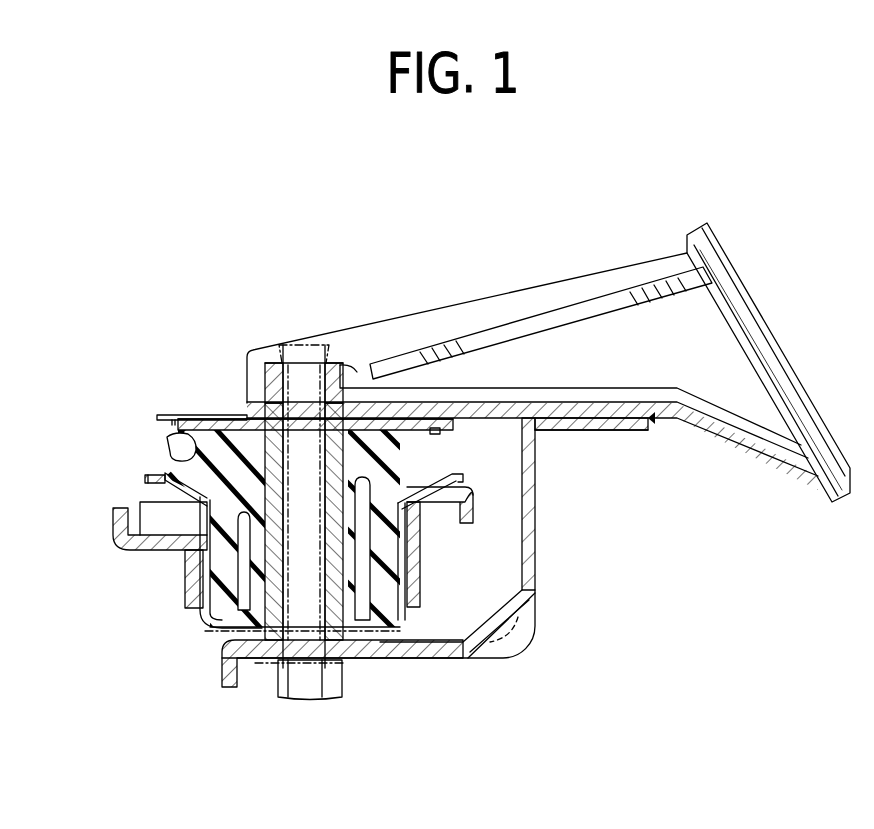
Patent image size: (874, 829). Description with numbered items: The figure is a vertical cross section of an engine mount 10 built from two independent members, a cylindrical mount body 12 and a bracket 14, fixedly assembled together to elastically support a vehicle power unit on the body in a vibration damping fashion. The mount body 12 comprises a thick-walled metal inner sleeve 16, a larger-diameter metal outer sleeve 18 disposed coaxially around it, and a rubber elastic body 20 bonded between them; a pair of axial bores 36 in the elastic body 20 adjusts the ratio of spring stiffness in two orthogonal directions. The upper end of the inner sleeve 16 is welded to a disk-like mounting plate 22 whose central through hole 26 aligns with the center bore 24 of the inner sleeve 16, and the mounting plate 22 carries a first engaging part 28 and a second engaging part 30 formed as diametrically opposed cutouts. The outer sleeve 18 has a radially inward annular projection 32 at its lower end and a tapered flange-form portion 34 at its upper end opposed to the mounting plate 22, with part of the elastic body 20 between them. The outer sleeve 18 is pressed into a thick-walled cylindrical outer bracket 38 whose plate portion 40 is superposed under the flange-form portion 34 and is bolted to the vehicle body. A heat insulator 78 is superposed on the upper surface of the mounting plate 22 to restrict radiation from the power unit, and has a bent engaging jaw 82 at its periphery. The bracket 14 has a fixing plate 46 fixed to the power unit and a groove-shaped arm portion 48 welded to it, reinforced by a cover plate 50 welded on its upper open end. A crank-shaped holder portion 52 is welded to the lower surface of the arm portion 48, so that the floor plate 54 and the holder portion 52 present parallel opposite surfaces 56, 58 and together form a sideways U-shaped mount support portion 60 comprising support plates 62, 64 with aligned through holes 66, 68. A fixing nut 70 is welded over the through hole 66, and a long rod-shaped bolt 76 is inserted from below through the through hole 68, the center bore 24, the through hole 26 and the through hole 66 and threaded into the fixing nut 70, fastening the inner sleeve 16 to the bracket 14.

The engine mount 10 is at (495, 222).
The mount body 12 is at (136, 469).
The bracket 14 is at (743, 268).
The inner sleeve 16 is at (272, 565).
The outer sleeve 18 is at (405, 535).
The elastic body 20 is at (405, 462).
The mounting plate 22 is at (200, 423).
The center bore 24 is at (333, 642).
The through hole 26 is at (288, 422).
The first engaging part 28 is at (525, 432).
The second engaging part 30 is at (167, 437).
The annular projection 32 is at (405, 652).
The flange-form portion 34 is at (145, 479).
The bores 36 is at (248, 606).
The outer bracket 38 is at (116, 538).
The plate portion 40 is at (148, 552).
The fixing plate 46 is at (765, 342).
The arm portion 48 is at (690, 413).
The cover plate 50 is at (463, 325).
The holder portion 52 is at (535, 520).
The floor plate 54 is at (532, 467).
The opposite surface 56 is at (396, 417).
The opposite surface 58 is at (380, 642).
The mount support portion 60 is at (493, 666).
The support plate 62 is at (357, 395).
The support plate 64 is at (440, 656).
The through hole 66 is at (312, 400).
The through hole 68 is at (290, 662).
The fixing nut 70 is at (280, 398).
The rod-shaped bolt 76 is at (303, 683).
The heat insulator 78 is at (173, 416).
The engaging jaw 82 is at (440, 432).